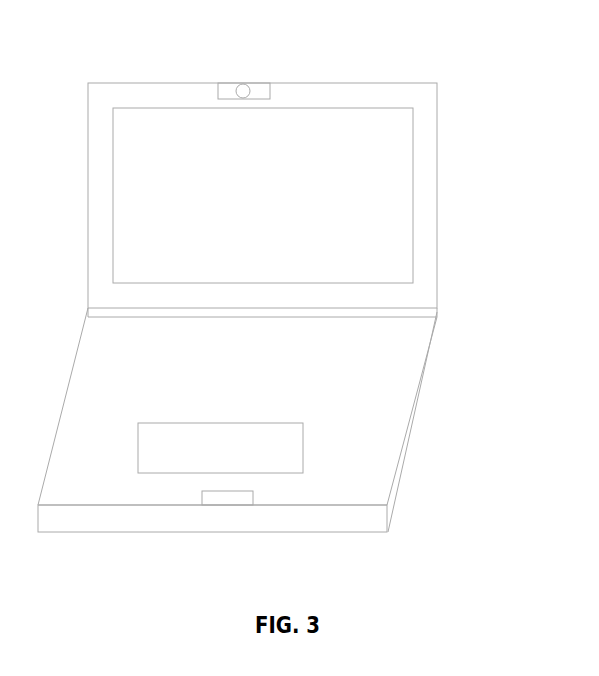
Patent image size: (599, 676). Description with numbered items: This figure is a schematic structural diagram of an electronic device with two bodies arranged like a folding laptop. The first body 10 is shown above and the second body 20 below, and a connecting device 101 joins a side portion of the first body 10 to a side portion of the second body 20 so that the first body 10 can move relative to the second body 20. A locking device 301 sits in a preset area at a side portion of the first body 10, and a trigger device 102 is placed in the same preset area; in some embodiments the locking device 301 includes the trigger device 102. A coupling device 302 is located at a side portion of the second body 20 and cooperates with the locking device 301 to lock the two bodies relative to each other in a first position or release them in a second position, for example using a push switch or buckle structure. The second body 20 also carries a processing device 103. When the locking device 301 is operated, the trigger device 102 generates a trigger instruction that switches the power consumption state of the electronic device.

The first body 10 is at (437, 147).
The connecting device 101 is at (437, 309).
The trigger device 102 is at (262, 91).
The locking device 301 is at (219, 91).
The second body 20 is at (422, 397).
The processing device 103 is at (303, 433).
The coupling device 302 is at (228, 497).